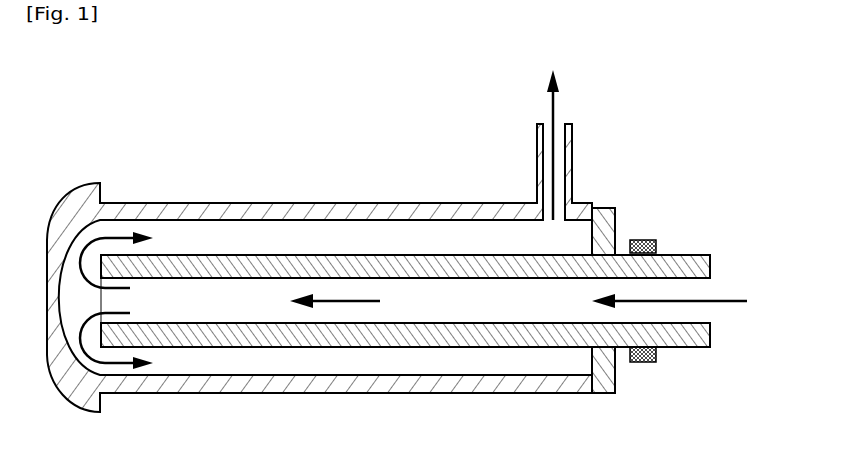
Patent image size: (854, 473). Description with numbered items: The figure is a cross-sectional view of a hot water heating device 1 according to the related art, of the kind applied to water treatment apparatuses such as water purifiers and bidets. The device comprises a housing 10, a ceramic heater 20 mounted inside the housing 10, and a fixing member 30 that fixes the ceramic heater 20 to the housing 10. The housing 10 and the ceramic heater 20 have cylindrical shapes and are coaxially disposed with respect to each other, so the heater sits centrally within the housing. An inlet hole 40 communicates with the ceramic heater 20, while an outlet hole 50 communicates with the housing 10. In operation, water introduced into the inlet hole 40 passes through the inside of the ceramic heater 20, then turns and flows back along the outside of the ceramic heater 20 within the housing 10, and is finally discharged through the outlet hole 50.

The hot water heating device 1 is at (276, 168).
The housing 10 is at (53, 366).
The ceramic heater 20 is at (392, 340).
The fixing member 30 is at (647, 239).
The inlet hole 40 is at (698, 291).
The outlet hole 50 is at (558, 128).